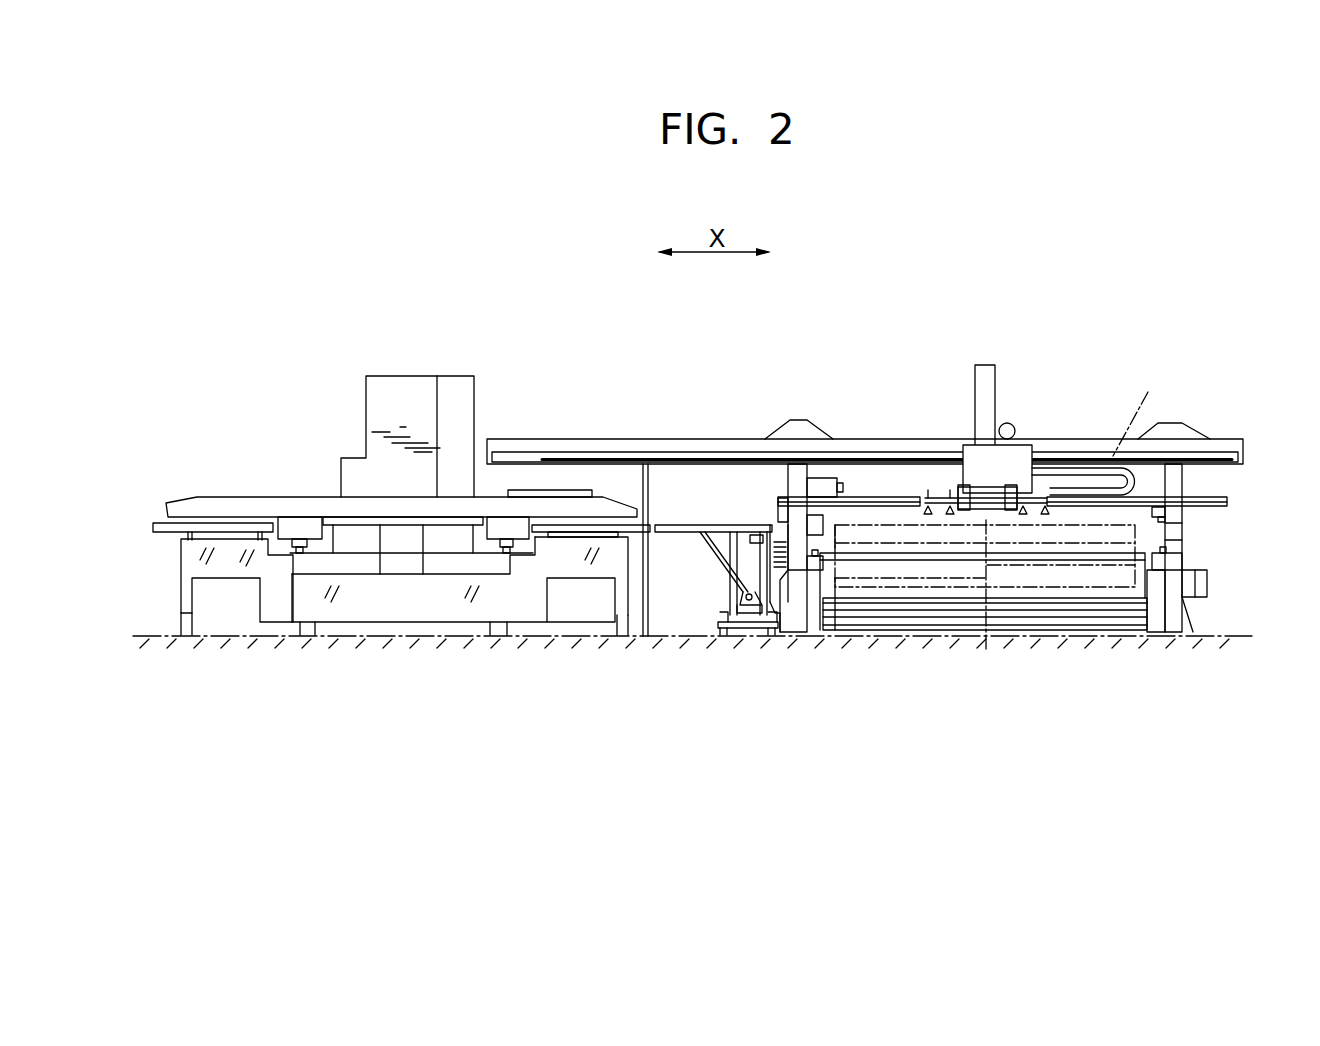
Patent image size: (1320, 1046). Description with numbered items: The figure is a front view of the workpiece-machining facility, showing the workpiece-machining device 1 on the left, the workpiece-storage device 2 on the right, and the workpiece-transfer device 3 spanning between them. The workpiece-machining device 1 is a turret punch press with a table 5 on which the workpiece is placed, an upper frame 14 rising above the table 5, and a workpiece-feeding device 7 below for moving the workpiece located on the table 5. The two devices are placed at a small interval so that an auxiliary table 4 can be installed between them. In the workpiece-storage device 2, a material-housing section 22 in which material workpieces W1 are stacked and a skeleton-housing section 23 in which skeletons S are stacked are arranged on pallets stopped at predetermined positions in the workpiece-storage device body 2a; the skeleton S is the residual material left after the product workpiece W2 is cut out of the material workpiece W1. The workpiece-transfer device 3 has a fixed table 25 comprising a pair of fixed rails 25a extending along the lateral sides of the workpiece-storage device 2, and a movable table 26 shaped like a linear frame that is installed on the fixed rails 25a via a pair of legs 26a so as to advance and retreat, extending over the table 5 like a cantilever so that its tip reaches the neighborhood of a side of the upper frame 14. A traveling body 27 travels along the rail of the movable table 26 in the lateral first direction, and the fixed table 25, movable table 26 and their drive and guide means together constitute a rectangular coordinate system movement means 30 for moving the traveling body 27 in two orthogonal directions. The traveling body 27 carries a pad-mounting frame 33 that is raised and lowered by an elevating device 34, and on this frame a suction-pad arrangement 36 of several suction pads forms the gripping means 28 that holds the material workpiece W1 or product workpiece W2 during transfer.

The workpiece-machining device 1 is at (401, 471).
The workpiece-storage device 2 is at (1039, 637).
The workpiece-storage device body 2a is at (1155, 605).
The workpiece-transfer device 3 is at (1002, 417).
The auxiliary table 4 is at (673, 552).
The table 5 is at (565, 526).
The workpiece-feeding device 7 is at (455, 527).
The upper frame 14 is at (383, 398).
The material-housing section 22 is at (1118, 595).
The skeleton-housing section 23 is at (965, 608).
The fixed table 25 is at (1173, 603).
The fixed rails 25a is at (792, 573).
The movable table 26 is at (676, 462).
The legs 26a is at (795, 484).
The traveling body 27 is at (987, 455).
The gripping means 28 is at (895, 478).
The rectangular coordinate system movement means 30 is at (1061, 428).
The pad-mounting frame 33 is at (990, 497).
The elevating device 34 is at (1007, 423).
The suction-pad arrangement 36 is at (1049, 483).
The skeleton S is at (910, 590).
The material workpiece W1 is at (1028, 595).
The product workpiece W2 is at (1141, 410).